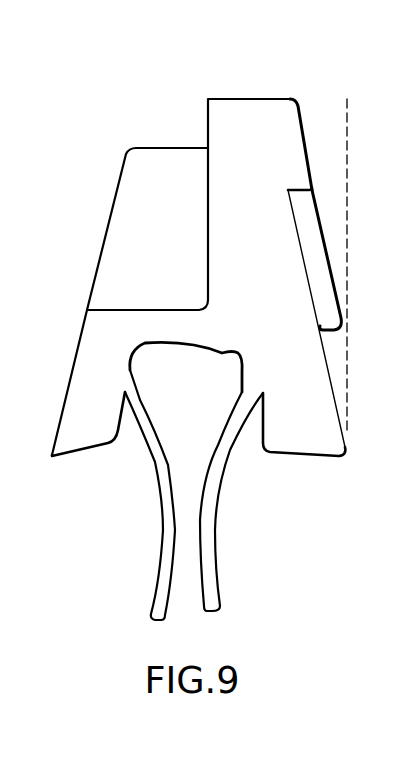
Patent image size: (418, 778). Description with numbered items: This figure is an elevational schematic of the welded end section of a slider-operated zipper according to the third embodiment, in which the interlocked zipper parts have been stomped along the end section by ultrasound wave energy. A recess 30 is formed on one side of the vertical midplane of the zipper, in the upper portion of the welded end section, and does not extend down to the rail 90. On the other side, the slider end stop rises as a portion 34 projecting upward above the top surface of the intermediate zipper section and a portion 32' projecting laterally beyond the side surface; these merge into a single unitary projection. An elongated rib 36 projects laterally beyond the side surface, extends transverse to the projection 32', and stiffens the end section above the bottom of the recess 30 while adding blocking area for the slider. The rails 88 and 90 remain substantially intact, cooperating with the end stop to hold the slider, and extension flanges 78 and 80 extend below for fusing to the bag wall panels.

The recess 30 is at (108, 255).
The upwardly projecting portion of slider end stop 34 is at (235, 97).
The laterally projecting portion of slider end stop 32' is at (305, 119).
The elongated rib 36 is at (312, 232).
The rail 88 is at (333, 452).
The rail 90 is at (64, 444).
The extension flange 78 is at (216, 530).
The extension flange 80 is at (163, 537).